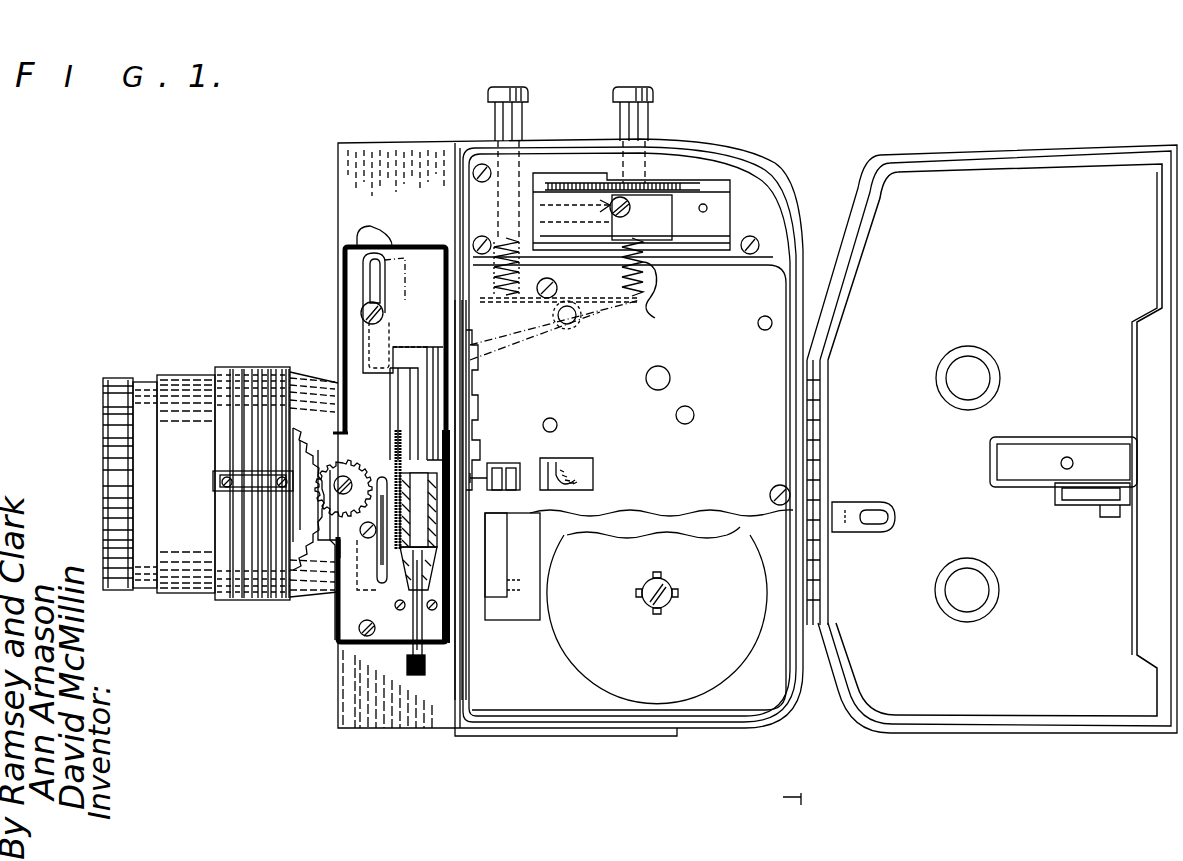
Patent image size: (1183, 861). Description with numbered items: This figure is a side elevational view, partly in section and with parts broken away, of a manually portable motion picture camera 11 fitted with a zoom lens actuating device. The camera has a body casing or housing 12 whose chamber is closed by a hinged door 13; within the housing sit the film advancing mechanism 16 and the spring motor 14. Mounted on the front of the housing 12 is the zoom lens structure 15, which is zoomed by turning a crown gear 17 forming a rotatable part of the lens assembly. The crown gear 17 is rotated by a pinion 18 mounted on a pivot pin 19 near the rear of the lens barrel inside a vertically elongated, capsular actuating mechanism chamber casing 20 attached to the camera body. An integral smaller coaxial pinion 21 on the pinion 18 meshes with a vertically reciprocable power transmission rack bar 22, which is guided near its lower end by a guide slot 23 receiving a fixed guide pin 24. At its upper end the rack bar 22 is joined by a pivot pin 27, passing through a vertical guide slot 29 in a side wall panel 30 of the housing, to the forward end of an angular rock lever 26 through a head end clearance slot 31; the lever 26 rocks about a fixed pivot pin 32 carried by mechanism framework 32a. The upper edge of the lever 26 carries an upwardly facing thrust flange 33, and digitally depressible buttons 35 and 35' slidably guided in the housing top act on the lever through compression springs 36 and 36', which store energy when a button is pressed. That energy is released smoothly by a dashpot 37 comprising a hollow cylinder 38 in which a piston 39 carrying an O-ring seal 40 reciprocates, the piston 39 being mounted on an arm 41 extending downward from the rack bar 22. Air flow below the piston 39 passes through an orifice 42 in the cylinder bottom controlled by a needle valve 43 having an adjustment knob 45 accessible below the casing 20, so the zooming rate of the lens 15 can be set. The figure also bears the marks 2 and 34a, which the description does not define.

The section line 2 is at (335, 273).
The motion picture camera 11 is at (326, 203).
The body casing or housing 12 is at (507, 698).
The hinged door 13 is at (927, 695).
The spring motor 14 is at (440, 560).
The zoom lens structure 15 is at (190, 598).
The film advancing mechanism 16 is at (528, 462).
The crown gear 17 is at (310, 533).
The pinion 18 is at (350, 465).
The pivot pin 19 is at (292, 468).
The actuating mechanism chamber casing 20 is at (355, 643).
The coaxial pinion 21 is at (330, 470).
The power transmission rack bar 22 is at (358, 570).
The guide slot 23 is at (343, 615).
The fixed guide pin 24 is at (360, 540).
The rock lever 26 is at (360, 243).
The pivot pin 27 is at (363, 317).
The vertical guide slot 29 is at (357, 290).
The side wall panel 30 is at (353, 221).
The head end clearance slot 31 is at (362, 313).
The fixed pivot pin 32 is at (567, 325).
The mechanism framework 32a is at (629, 483).
The thrust flange 33 is at (635, 258).
The plate 34a is at (752, 367).
The depressible button 35 is at (509, 147).
The depressible button 35' is at (632, 120).
The compression spring 36 is at (468, 257).
The compression spring 36' is at (657, 282).
The dashpot 37 is at (392, 412).
The hollow cylinder 38 is at (370, 347).
The piston 39 is at (455, 455).
The O-ring seal 40 is at (470, 470).
The arm 41 is at (470, 380).
The orifice 42 is at (400, 560).
The needle valve 43 is at (412, 620).
The adjustment knob 45 is at (410, 670).